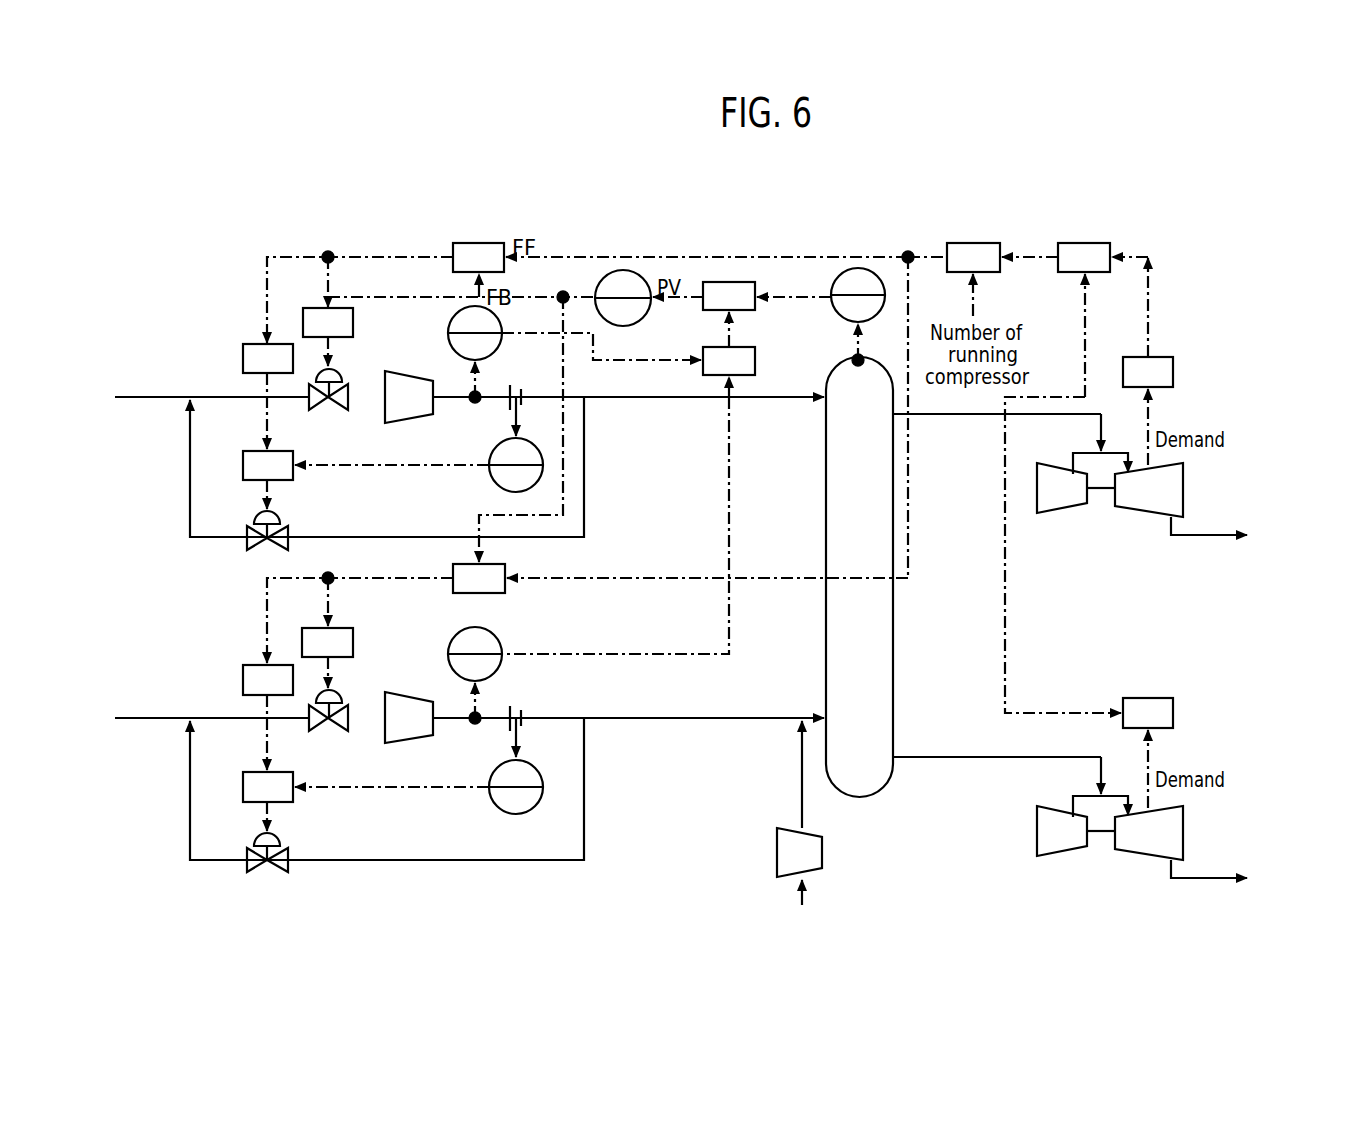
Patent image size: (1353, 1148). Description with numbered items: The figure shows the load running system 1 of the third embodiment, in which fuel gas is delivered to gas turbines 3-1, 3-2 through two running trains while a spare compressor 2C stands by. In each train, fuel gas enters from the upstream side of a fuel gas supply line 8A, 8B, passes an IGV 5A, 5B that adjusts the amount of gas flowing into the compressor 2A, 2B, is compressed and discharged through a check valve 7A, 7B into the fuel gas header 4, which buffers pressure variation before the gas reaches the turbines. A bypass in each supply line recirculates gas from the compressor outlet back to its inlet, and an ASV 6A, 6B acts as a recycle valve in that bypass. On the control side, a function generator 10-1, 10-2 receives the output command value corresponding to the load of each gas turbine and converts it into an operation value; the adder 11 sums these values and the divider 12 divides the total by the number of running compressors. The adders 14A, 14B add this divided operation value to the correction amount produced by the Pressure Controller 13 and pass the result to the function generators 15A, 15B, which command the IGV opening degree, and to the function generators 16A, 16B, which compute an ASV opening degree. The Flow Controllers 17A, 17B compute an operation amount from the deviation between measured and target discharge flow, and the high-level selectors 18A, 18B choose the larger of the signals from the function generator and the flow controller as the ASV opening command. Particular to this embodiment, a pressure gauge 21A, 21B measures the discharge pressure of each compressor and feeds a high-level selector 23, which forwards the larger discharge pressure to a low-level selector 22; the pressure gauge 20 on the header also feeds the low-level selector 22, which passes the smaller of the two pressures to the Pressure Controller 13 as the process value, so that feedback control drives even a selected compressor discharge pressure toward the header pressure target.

The load running system 1 is at (1260, 264).
The compressor 2A is at (412, 422).
The compressor 2B is at (412, 743).
The compressor 2C is at (822, 852).
The gas turbine 3-1 is at (1058, 518).
The gas turbine 3-2 is at (1030, 832).
The fuel gas header 4 is at (826, 505).
The IGV 5A is at (355, 410).
The IGV 5B is at (355, 731).
The ASV 6A is at (289, 536).
The ASV 6B is at (289, 858).
The check valve 7A is at (778, 386).
The check valve 7B is at (762, 706).
The fuel gas supply line 8A is at (133, 399).
The fuel gas supply line 8B is at (133, 720).
The function generator 10-1 is at (1173, 372).
The function generator 10-2 is at (1173, 713).
The adder 11 is at (1088, 243).
The divider 12 is at (975, 243).
The Pressure Controller (PC) 13 is at (650, 313).
The adder 14A is at (490, 243).
The adder 14B is at (480, 594).
The function generator 15A is at (375, 337).
The function generator 15B is at (353, 645).
The function generator 16A is at (243, 356).
The function generator 16B is at (243, 685).
The Flow Controller (FC) 17A is at (496, 481).
The Flow Controller (FC) 17B is at (500, 811).
The high-level selector 18A is at (243, 465).
The high-level selector 18B is at (243, 787).
The pressure gauge 20 is at (836, 314).
The pressure gauge 21A is at (502, 323).
The pressure gauge 21B is at (502, 668).
The low-level selector 22 is at (757, 293).
The high-level selector 23 is at (705, 378).